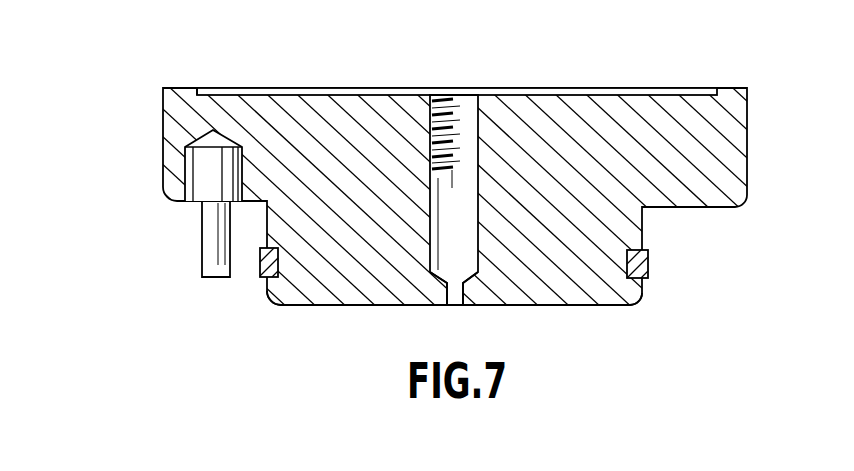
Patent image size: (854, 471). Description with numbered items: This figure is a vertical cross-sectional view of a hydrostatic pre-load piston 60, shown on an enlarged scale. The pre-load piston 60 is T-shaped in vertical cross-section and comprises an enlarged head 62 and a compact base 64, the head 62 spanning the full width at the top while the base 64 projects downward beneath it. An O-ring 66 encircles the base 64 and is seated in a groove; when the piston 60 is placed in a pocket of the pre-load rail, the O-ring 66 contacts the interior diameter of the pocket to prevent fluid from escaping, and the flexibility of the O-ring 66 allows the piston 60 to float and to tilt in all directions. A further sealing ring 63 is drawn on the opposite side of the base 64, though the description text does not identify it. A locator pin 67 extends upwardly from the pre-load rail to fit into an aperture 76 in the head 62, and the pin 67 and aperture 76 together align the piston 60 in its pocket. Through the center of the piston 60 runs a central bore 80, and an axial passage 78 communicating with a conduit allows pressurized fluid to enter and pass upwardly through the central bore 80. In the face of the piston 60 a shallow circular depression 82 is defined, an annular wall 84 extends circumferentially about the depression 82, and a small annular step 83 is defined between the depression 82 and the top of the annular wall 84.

The pre-load piston 60 is at (152, 220).
The enlarged head 62 is at (726, 158).
The O-ring seal 63 is at (280, 272).
The compact base 64 is at (610, 287).
The O-ring 66 is at (652, 268).
The locator pin 67 is at (213, 267).
The aperture 76 is at (212, 170).
The axial passage 78 is at (452, 297).
The central bore 80 is at (477, 170).
The shallow circular depression 82 is at (250, 88).
The annular step 83 is at (198, 90).
The annular wall 84 is at (728, 88).